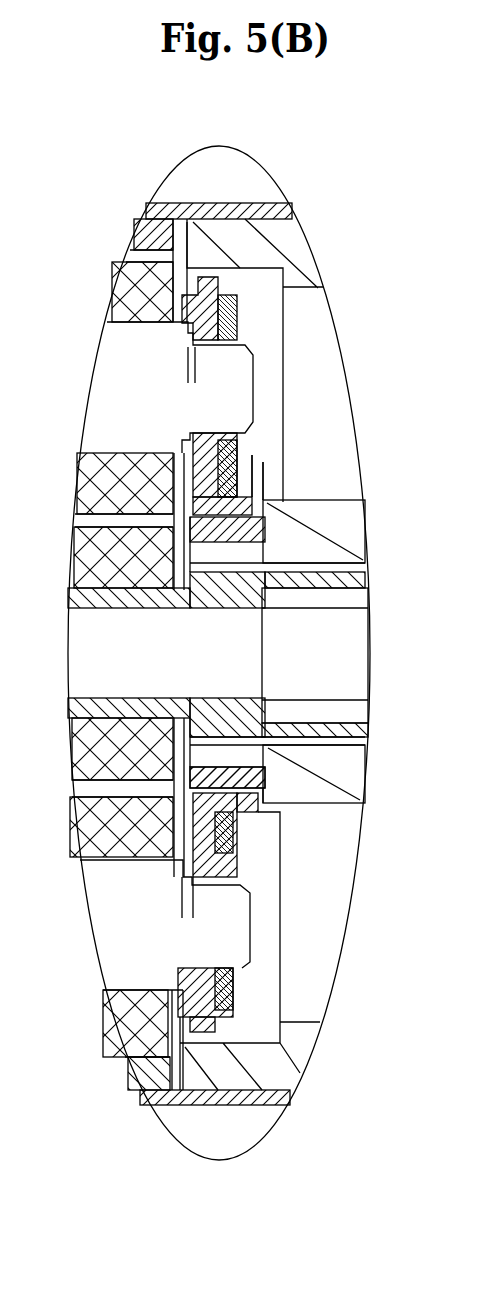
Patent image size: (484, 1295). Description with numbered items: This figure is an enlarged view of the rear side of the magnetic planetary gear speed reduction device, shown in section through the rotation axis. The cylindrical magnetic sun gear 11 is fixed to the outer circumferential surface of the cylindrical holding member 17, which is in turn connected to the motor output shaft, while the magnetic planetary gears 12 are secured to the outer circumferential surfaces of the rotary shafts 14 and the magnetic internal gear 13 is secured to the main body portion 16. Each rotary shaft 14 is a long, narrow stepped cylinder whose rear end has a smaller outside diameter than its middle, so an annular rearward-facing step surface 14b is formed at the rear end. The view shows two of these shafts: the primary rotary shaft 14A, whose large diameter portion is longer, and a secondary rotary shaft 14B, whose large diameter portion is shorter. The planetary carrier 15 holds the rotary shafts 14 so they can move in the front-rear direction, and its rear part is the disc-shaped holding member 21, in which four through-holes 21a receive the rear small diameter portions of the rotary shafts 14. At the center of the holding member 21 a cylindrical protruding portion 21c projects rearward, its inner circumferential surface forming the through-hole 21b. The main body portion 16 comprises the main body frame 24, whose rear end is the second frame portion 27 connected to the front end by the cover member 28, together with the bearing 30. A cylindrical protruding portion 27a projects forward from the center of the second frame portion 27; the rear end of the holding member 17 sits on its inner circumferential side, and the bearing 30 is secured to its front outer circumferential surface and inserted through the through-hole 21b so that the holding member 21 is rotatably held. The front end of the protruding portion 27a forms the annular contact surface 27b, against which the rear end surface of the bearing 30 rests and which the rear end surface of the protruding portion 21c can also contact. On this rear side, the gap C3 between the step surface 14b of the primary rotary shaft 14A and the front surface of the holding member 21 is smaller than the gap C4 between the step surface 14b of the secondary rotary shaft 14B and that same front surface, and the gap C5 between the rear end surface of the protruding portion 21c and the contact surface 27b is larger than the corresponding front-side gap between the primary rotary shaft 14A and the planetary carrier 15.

The magnetic sun gear 11 is at (92, 522).
The magnetic planetary gear 12 is at (138, 252).
The magnetic internal gear 13 is at (150, 204).
The rotary shaft 14 is at (157, 688).
The primary rotary shaft 14A is at (110, 322).
The secondary rotary shaft 14B is at (118, 992).
The step surface 14b is at (238, 335).
The planetary carrier 15 is at (271, 601).
The main body portion 16 is at (257, 620).
The holding member 17 is at (85, 590).
The holding member 21 is at (220, 277).
The through-hole 21a is at (218, 433).
The through-hole 21b is at (212, 737).
The protruding portion 21c is at (238, 813).
The main body frame 24 is at (210, 295).
The second frame portion 27 is at (286, 206).
The protruding portion 27a is at (335, 500).
The contact surface 27b is at (252, 808).
The cover member 28 is at (188, 222).
The bearing 30 is at (192, 578).
The gap C3 is at (201, 380).
The gap C4 is at (199, 913).
The gap C5 is at (240, 466).